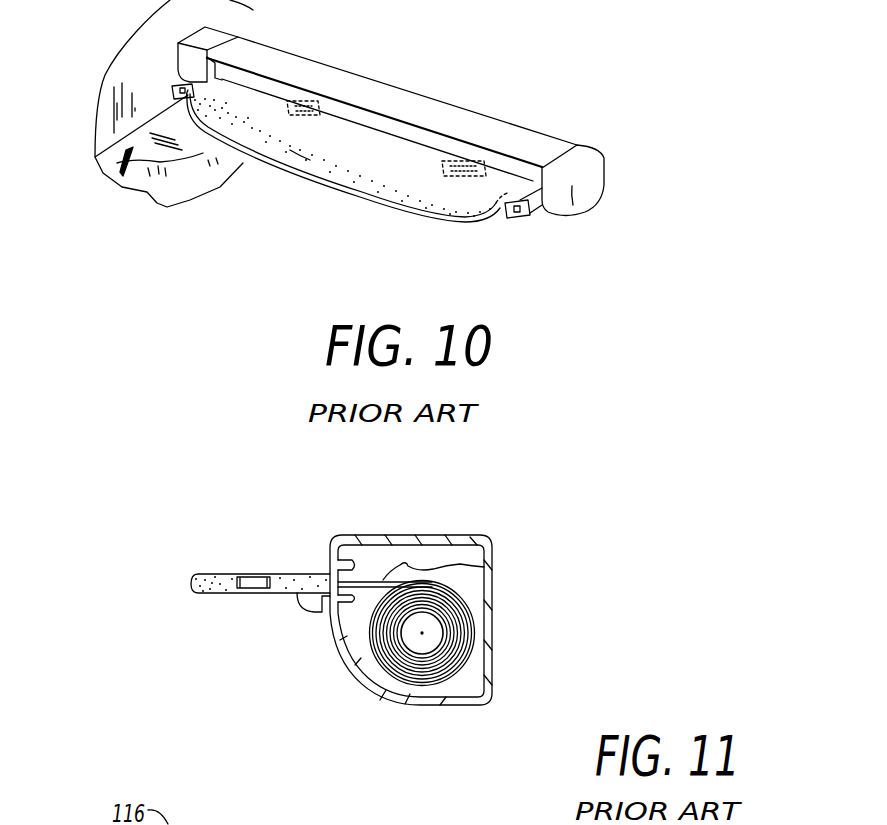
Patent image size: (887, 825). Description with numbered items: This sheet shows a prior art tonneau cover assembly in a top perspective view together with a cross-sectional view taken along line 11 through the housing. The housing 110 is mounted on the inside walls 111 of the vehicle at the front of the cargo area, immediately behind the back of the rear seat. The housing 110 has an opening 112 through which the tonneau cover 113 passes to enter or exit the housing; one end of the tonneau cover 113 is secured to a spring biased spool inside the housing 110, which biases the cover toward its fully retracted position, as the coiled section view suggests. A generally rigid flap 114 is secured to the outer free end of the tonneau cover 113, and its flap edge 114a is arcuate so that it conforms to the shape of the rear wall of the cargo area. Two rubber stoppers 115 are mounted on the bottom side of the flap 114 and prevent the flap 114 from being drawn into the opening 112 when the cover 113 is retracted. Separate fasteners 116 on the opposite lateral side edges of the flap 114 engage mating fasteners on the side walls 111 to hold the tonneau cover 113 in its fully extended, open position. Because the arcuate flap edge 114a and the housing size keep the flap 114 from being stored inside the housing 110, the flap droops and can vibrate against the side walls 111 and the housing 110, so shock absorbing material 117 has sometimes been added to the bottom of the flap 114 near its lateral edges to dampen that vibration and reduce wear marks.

In FIG. 10, the housing 110 is at (397, 100).
In FIG. 11, the housing 110 is at (414, 535).
In FIG. 10, the inside walls 111 is at (118, 177).
In FIG. 11, the opening 112 is at (320, 558).
In FIG. 11, the tonneau cover 113 is at (490, 557).
In FIG. 10, the flap 114 is at (360, 172).
In FIG. 11, the flap 114 is at (302, 574).
In FIG. 10, the flap edge 114a is at (303, 180).
In FIG. 10, the rubber stoppers 115 is at (326, 104).
In FIG. 11, the rubber stoppers 115 is at (298, 610).
In FIG. 10, the fasteners 116 is at (175, 93).
In FIG. 11, the fasteners 116 is at (250, 577).
In FIG. 10, the shock absorbing material 117 is at (113, 135).
In FIG. 10, the line 11— 11 is at (593, 130).